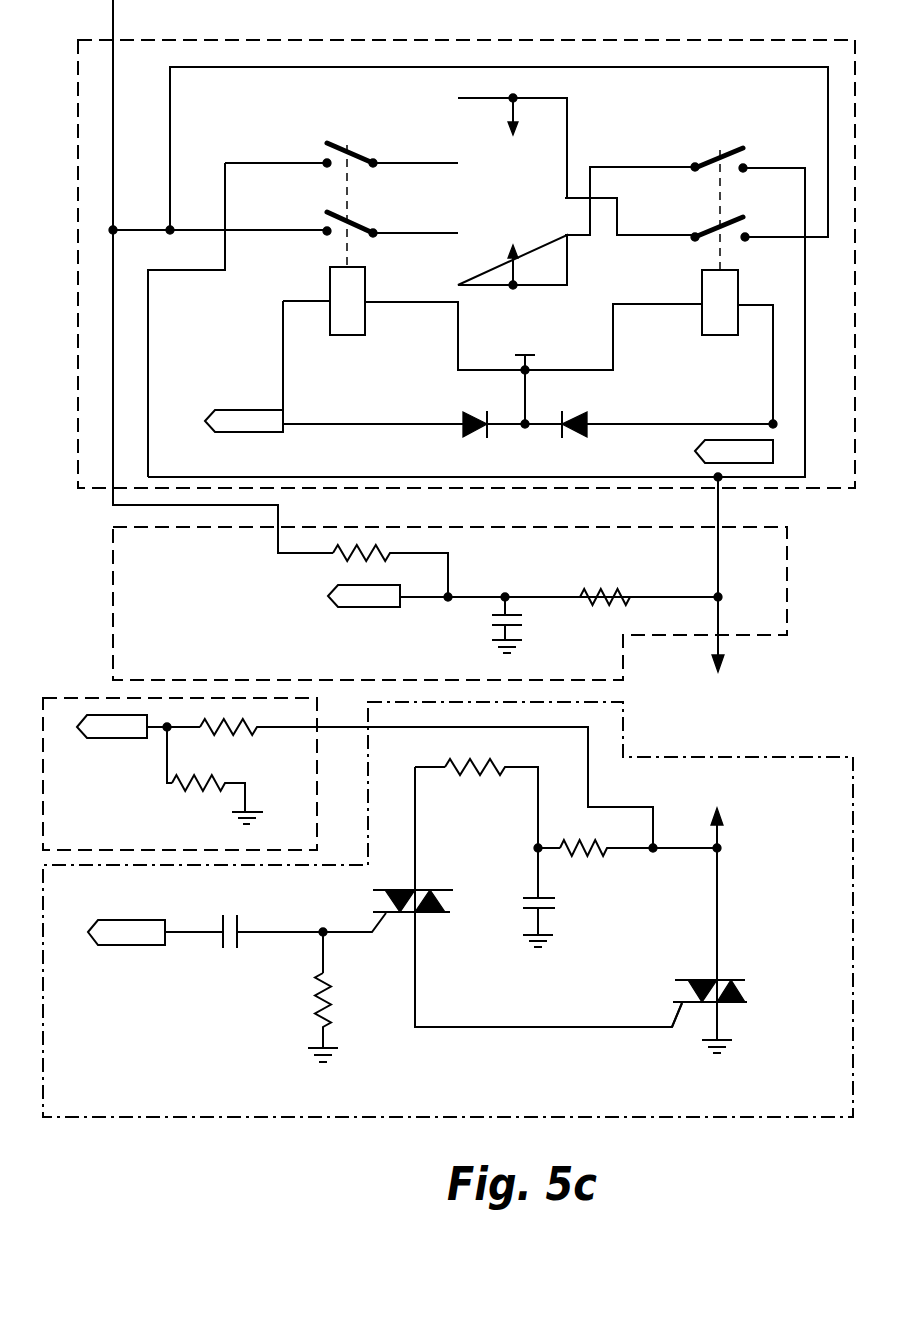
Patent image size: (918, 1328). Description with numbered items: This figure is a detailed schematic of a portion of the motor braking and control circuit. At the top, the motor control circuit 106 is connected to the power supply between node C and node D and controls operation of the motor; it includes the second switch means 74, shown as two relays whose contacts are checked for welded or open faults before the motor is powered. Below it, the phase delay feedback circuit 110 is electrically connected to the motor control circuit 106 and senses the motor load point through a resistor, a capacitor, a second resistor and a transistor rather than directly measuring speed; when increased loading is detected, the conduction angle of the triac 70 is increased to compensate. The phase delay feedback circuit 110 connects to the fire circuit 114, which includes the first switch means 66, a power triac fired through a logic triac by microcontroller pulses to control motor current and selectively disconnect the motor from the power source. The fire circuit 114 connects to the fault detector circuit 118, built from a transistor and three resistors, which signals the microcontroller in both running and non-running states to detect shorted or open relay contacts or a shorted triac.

The motor control circuit 106 is at (755, 22).
The phase delay feedback circuit 110 is at (756, 565).
The fault detector circuit 118 is at (80, 702).
The fire circuit 114 is at (222, 1098).
The second switch means 74 is at (314, 314).
The first switch means 66 is at (733, 971).
The triac 70 is at (686, 990).